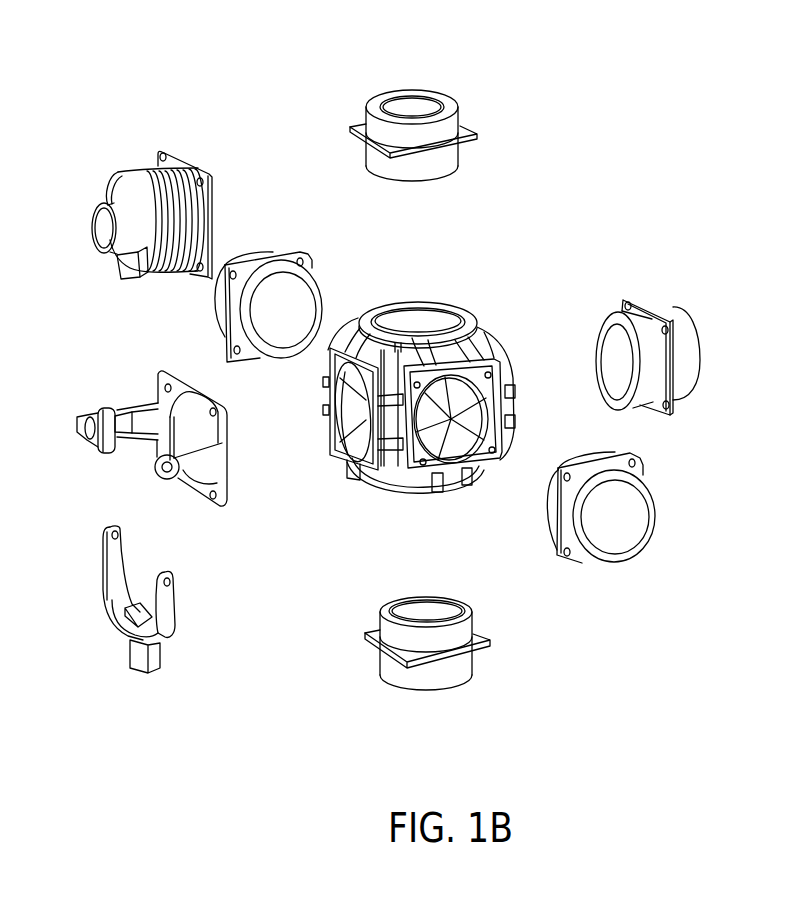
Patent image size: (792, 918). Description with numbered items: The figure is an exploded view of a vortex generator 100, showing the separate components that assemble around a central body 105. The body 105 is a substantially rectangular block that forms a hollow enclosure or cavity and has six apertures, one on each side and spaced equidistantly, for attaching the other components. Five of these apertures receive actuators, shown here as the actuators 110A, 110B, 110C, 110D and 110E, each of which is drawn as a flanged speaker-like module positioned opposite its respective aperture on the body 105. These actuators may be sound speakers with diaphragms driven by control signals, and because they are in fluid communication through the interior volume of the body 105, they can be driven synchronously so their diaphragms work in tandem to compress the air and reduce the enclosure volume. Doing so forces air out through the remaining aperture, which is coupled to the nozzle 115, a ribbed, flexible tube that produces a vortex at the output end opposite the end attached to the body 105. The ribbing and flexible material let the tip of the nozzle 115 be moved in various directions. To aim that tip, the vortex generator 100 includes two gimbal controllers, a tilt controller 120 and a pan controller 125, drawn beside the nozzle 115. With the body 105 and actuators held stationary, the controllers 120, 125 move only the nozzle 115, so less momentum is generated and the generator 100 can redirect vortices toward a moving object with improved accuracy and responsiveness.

The vortex generator 100 is at (632, 184).
The body 105 is at (488, 310).
The actuator 110A is at (411, 89).
The actuator 110B is at (700, 339).
The actuator 110C is at (648, 545).
The actuator 110D is at (447, 690).
The connector module 110E is at (332, 292).
The nozzle 115 is at (142, 165).
The tilt controller 120 is at (103, 590).
The pan controller 125 is at (226, 462).